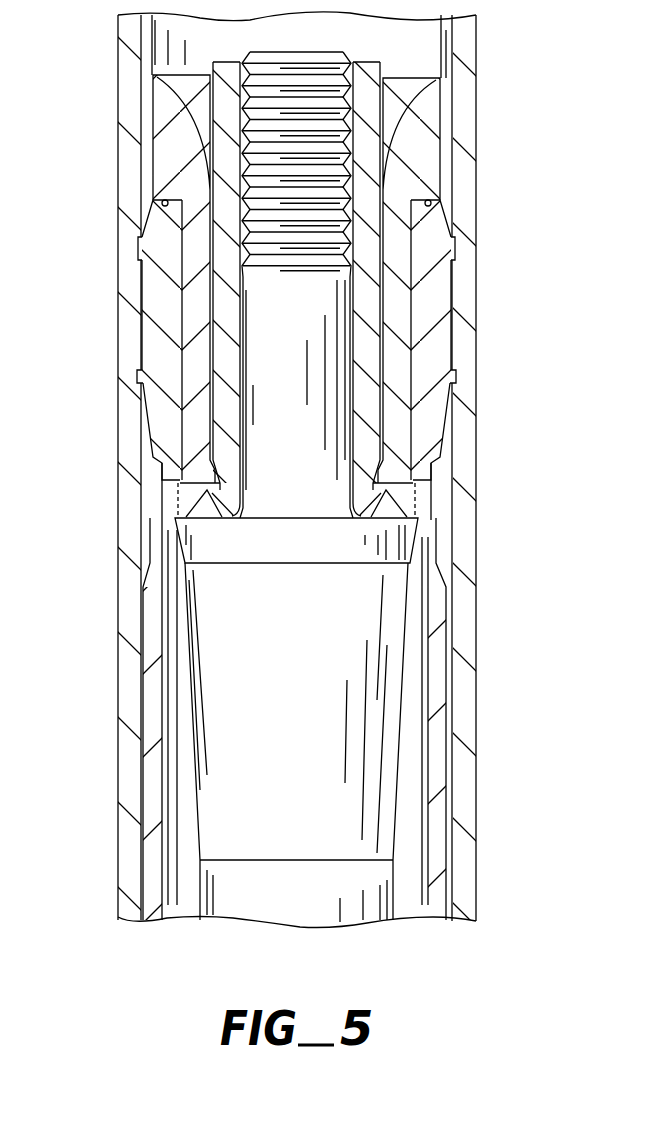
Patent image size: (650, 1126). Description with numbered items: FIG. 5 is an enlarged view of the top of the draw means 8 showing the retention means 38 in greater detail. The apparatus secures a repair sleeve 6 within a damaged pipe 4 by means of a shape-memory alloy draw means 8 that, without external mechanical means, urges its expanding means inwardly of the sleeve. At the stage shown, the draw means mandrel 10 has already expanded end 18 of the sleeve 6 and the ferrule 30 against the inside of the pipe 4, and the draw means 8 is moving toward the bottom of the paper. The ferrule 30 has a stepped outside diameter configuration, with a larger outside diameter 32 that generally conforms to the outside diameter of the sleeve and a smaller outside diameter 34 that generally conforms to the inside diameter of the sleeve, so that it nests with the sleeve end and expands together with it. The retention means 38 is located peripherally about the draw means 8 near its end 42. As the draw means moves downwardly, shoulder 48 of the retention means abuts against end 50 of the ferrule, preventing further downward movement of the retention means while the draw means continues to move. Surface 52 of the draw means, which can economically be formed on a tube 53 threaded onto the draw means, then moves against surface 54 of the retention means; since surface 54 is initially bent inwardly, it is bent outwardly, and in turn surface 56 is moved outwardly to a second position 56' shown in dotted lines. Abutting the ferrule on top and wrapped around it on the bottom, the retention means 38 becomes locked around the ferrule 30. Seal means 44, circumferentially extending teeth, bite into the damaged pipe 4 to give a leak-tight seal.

The damaged pipe 4 is at (455, 752).
The repair sleeve 6 is at (162, 737).
The draw means 8 is at (330, 898).
The expanding means (mandrel) 10 is at (257, 795).
The end of sleeve 18 is at (452, 247).
The ferrule 30 is at (167, 387).
The larger outside diameter of ferrule 32 is at (147, 215).
The smaller outside diameter of ferrule 34 is at (441, 345).
The retention means 38 is at (197, 308).
The end of draw means 42 is at (353, 62).
The seal means 44 is at (455, 378).
The shoulder of retention means 48 is at (177, 188).
The end of ferrule 50 is at (440, 183).
The surface of draw means 52 is at (210, 493).
The tube 53 is at (230, 183).
The surface of retention means 54 is at (373, 490).
The surface of retention means 56 is at (134, 558).
The second position of surface 56' is at (460, 558).